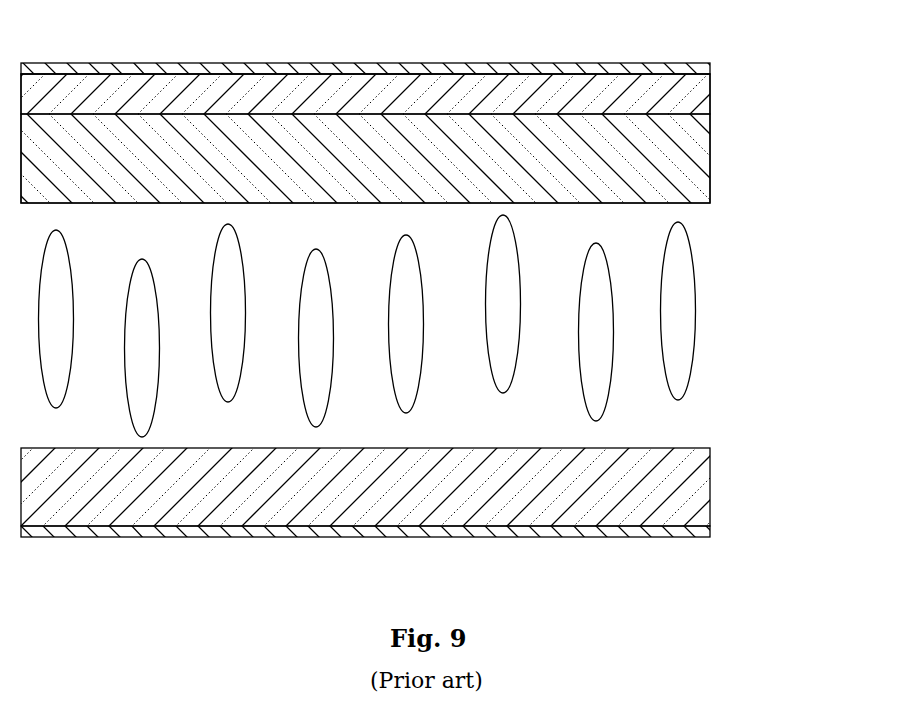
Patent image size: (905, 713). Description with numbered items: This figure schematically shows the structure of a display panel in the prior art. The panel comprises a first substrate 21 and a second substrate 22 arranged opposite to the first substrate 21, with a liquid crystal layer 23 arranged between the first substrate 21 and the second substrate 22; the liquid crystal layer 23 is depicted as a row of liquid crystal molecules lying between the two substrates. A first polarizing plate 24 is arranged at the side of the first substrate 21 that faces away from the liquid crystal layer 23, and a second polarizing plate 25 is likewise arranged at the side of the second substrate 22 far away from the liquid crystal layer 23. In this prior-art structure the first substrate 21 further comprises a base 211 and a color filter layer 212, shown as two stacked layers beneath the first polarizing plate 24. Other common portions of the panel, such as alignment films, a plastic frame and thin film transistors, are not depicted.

The first substrate 21 is at (785, 100).
The base 211 is at (704, 97).
The color filter layer 212 is at (700, 162).
The second substrate 22 is at (690, 503).
The liquid crystal layer 23 is at (708, 312).
The first polarizing plate 24 is at (698, 65).
The second polarizing plate 25 is at (678, 533).